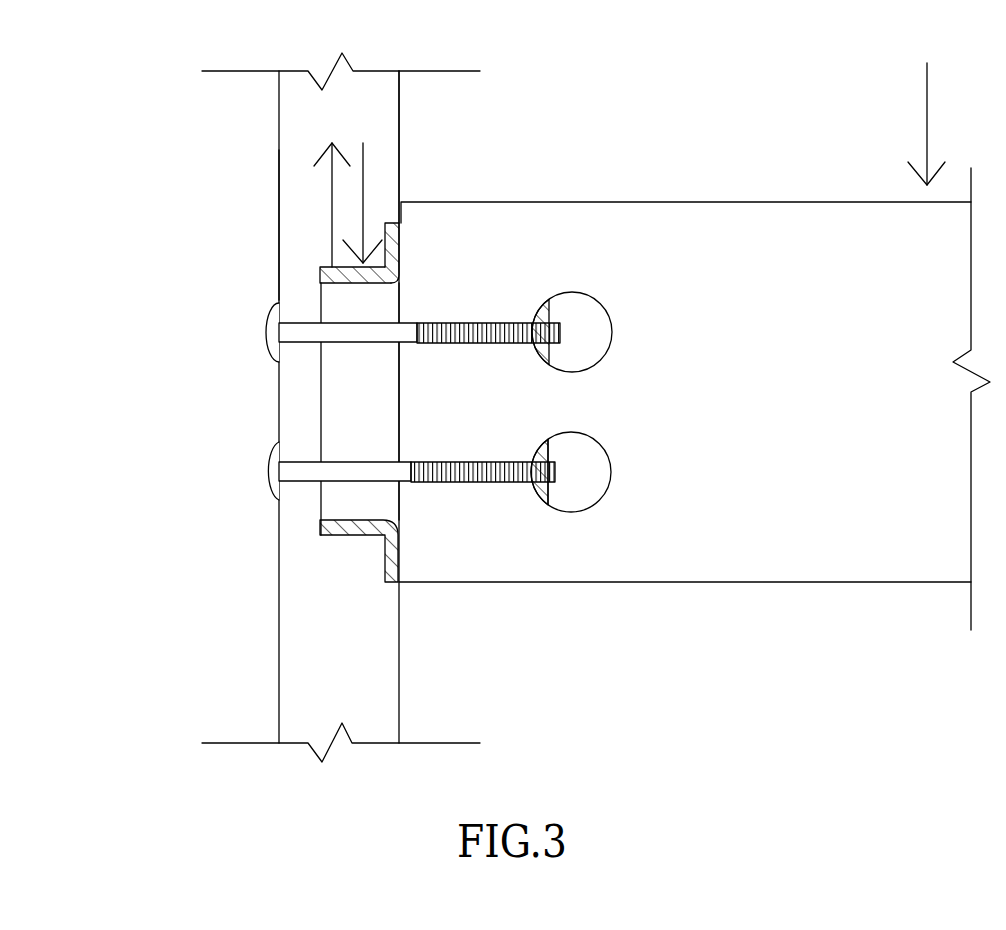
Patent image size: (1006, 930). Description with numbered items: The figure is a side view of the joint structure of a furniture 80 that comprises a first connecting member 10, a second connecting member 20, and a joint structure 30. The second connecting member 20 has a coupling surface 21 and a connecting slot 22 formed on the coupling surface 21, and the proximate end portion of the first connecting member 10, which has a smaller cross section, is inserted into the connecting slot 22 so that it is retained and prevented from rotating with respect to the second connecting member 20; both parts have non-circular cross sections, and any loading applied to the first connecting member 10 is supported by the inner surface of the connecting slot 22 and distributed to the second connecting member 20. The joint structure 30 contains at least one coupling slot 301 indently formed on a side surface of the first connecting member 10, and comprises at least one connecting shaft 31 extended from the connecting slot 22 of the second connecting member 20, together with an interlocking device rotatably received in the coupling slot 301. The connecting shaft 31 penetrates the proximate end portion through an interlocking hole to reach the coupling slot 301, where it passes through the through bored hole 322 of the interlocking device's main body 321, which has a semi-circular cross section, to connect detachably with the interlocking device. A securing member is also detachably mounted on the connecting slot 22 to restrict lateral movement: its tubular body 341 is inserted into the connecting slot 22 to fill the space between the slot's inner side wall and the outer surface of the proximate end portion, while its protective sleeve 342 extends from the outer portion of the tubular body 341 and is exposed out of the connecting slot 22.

The first connecting member 10 is at (598, 110).
The second connecting member 20 is at (227, 527).
The coupling surface 21 is at (402, 137).
The connecting slot 22 is at (358, 418).
The joint structure 30 is at (547, 441).
The connecting shaft 31 is at (346, 468).
The coupling slot 301 is at (709, 409).
The main body 321 is at (535, 492).
The through bored hole 322 is at (550, 455).
The tubular body 341 is at (352, 272).
The protective sleeve 342 is at (393, 257).
The furniture 80 is at (197, 230).